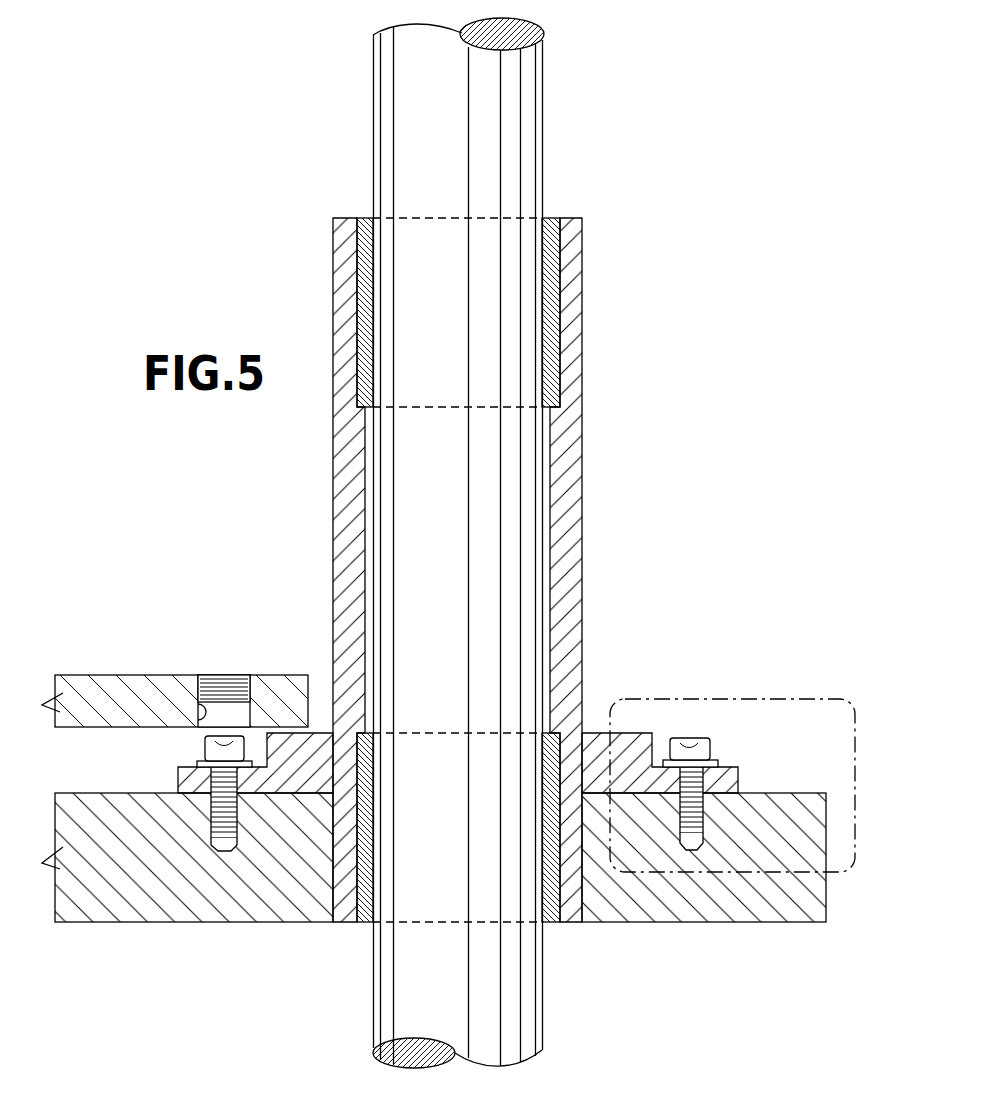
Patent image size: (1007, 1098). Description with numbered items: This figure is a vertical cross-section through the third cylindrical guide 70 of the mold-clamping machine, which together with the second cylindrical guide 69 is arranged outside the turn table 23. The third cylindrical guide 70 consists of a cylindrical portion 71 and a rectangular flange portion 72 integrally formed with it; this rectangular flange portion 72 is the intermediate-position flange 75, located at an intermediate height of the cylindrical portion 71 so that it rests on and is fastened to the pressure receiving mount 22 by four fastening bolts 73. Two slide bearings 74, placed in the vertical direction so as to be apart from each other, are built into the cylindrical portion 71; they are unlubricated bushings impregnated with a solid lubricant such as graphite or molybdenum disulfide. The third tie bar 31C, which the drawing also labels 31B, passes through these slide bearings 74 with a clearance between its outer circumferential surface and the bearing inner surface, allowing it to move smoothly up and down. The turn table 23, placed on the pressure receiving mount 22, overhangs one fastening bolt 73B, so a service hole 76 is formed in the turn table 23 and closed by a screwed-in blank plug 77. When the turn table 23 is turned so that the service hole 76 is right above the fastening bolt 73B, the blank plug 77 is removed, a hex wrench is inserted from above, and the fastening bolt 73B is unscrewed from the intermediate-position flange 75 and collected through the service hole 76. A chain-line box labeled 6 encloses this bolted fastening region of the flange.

The third tie bar 31C is at (533, 543).
The rotating shaft 31B is at (513, 119).
The slide bearing 74 is at (362, 218).
The third cylindrical guide 70 is at (520, 569).
The second cylindrical guide 69 is at (520, 569).
The cylindrical portion 71 is at (565, 518).
The turn table 23 is at (105, 698).
The blank plug 77 is at (222, 686).
The service hole 76 is at (197, 712).
The fastening bolt 73B is at (215, 748).
The fastening bolt 73 is at (690, 745).
The fixing portion 6 is at (743, 698).
The rectangular flange portion 72 is at (506, 756).
The intermediate-position flange 75 is at (737, 778).
The pressure receiving mount 22 is at (688, 905).